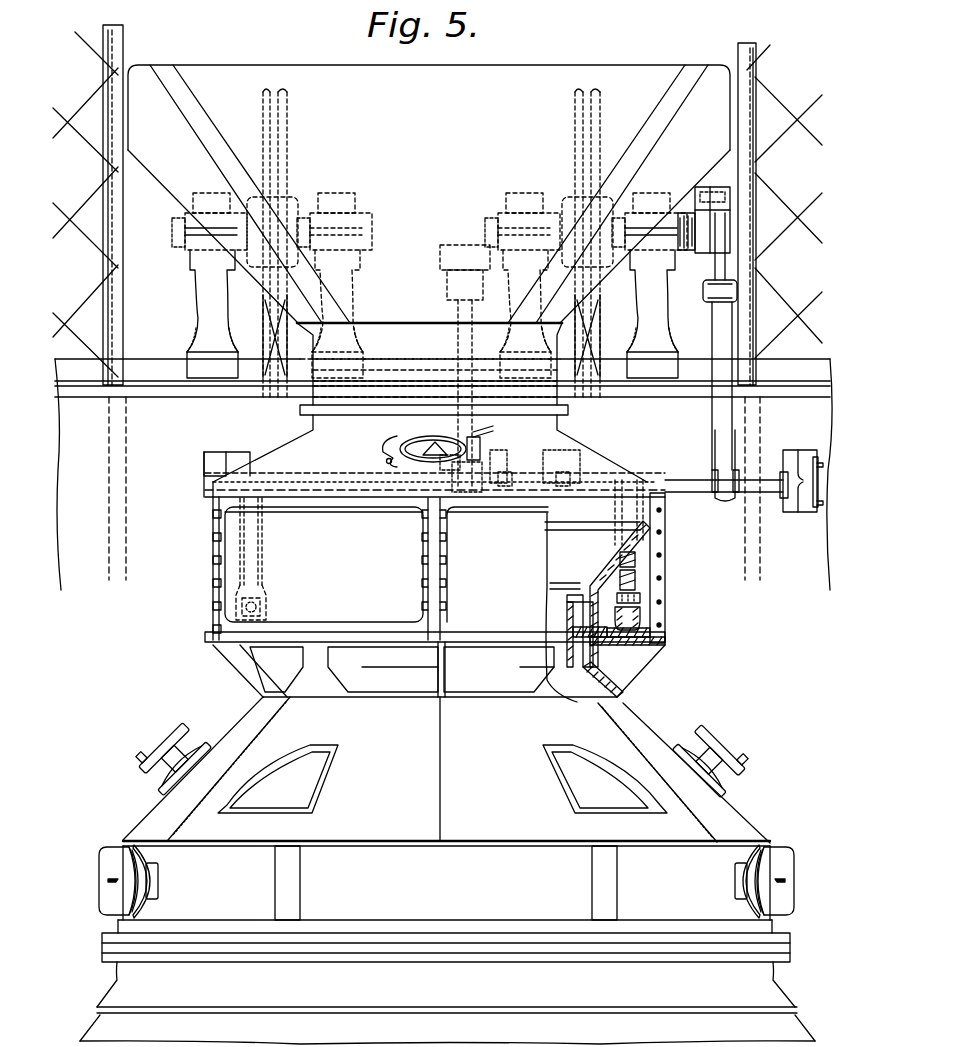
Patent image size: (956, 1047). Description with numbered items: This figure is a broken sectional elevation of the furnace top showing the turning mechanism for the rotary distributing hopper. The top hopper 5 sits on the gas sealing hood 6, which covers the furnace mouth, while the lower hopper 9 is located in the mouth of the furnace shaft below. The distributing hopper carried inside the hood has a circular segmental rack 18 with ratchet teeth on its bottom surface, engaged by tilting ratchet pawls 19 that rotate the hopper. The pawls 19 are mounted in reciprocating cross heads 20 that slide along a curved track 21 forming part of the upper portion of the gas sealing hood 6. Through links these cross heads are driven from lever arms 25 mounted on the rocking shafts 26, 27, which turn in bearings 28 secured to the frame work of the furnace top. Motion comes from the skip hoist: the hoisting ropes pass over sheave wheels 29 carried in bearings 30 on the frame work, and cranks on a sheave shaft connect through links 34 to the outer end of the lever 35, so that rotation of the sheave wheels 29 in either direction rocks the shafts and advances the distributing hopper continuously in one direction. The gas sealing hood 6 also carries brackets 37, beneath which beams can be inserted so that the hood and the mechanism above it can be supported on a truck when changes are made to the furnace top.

The top hopper 5 is at (429, 273).
The gas sealing hood 6 is at (434, 534).
The lower hopper 9 is at (415, 669).
The circular segmental rack 18 is at (635, 573).
The tilting ratchet pawls 19 is at (640, 597).
The reciprocating cross heads 20 is at (640, 617).
The curved track 21 is at (640, 645).
The lever arms 25 is at (262, 556).
The rocking shaft 26 is at (700, 486).
The rocking shaft 27 is at (358, 499).
The bearings 28 is at (802, 500).
The sheave wheels 29 is at (282, 140).
The bearings 30 is at (205, 297).
The links 34 is at (725, 255).
The lever 35 is at (720, 329).
The brackets 37 is at (442, 779).